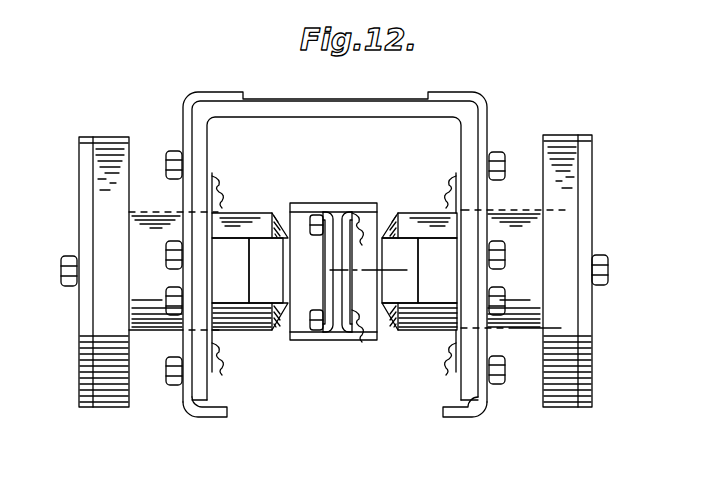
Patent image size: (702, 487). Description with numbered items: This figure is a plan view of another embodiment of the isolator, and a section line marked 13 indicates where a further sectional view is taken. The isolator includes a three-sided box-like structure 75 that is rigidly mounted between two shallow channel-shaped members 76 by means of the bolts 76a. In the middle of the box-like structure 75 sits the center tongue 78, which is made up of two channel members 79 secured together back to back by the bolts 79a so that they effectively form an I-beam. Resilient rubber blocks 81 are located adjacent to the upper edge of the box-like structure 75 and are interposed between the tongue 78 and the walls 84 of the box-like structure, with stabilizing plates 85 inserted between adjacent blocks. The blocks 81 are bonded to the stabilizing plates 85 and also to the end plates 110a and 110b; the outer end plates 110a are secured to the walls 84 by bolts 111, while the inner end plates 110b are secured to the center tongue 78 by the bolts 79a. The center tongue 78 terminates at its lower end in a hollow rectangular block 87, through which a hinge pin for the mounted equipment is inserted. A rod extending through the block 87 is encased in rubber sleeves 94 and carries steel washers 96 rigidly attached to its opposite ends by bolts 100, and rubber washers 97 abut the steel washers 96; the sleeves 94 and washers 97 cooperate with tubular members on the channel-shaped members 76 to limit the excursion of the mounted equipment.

The section line 13- 13 is at (334, 396).
The three-sided box-like structure 75 is at (352, 96).
The channel-shaped members 76 is at (185, 123).
The bolts 76a is at (172, 158).
The center tongue 78 is at (328, 348).
The channel members 79 is at (307, 208).
The bolts 79a is at (350, 213).
The rubber blocks 81 is at (233, 284).
The walls 84 is at (202, 141).
The stabilizing plates 85 is at (285, 288).
The hollow rectangular block 87 is at (298, 327).
The rubber sleeves 94 is at (240, 327).
The steel washers 96 is at (84, 171).
The rubber washers 97 is at (107, 139).
The bolts 100 is at (63, 265).
The outer end plates 110a is at (218, 206).
The inner end plates 110b is at (335, 277).
The bolts 111 is at (218, 185).